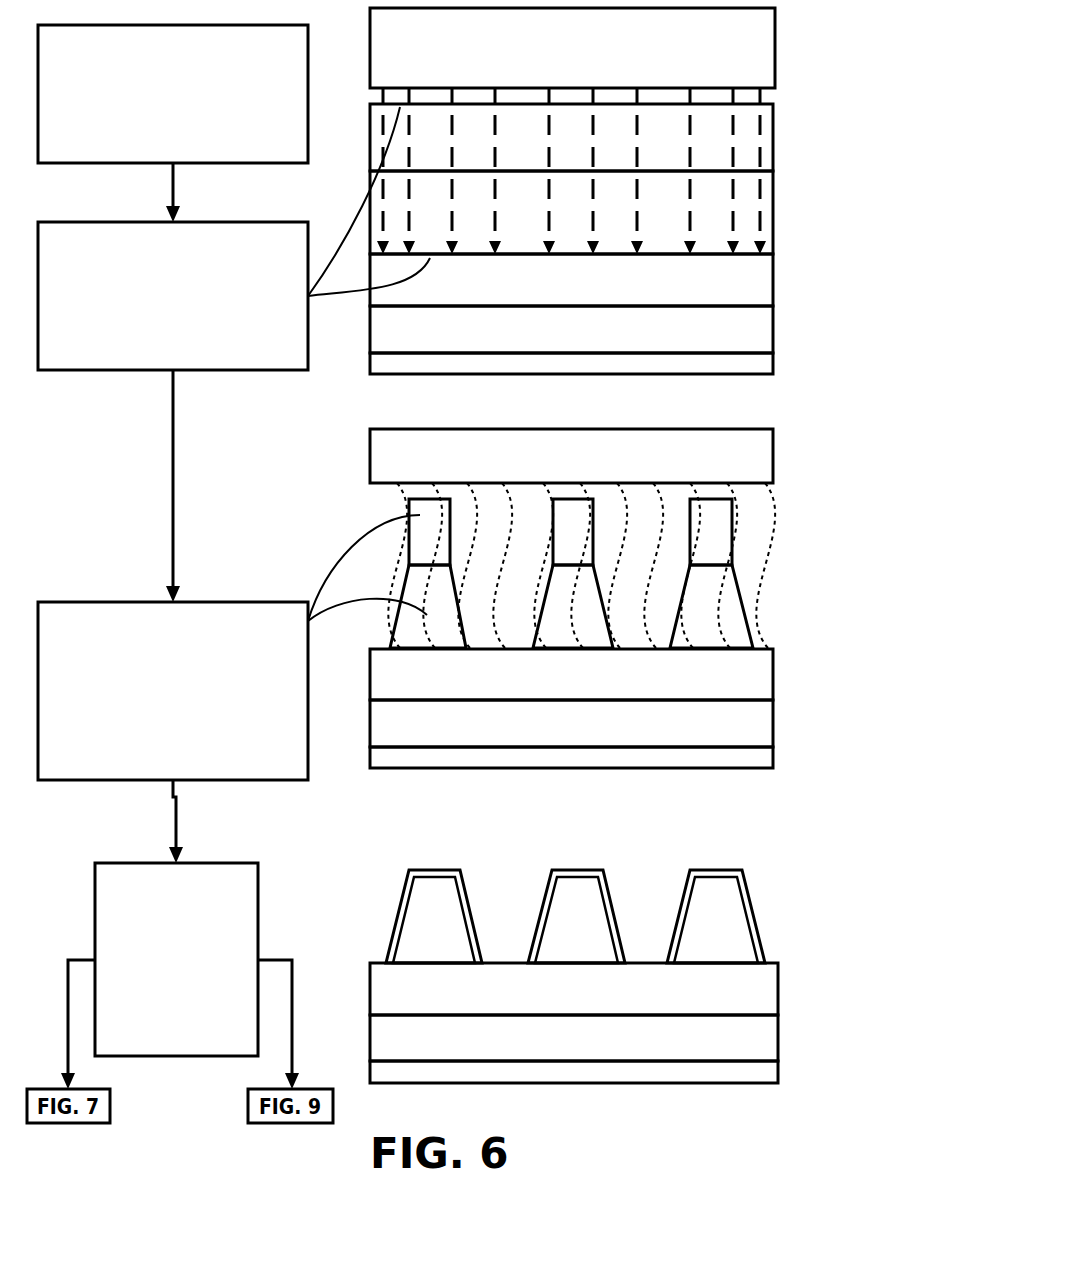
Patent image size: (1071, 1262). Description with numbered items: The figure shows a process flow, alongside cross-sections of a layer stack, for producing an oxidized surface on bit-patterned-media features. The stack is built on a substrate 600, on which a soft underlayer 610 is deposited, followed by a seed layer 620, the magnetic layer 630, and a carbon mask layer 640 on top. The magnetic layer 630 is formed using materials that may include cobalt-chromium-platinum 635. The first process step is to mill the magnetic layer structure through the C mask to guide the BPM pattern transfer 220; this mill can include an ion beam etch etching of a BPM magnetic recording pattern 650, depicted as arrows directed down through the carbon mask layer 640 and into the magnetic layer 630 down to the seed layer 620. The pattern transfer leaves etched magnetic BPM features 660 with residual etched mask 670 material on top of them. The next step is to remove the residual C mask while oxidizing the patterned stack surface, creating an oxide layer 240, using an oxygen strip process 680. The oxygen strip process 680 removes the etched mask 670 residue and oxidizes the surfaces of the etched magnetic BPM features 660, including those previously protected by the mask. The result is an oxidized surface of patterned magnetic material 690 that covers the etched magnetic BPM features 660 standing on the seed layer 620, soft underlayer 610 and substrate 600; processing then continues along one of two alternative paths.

The substrate 600 is at (760, 363).
The soft underlayer 610 is at (760, 337).
The seed layer 620 is at (760, 283).
The magnetic layer 630 is at (765, 212).
The carbon mask layer 640 is at (765, 143).
The ion beam etch etching of a BPM magnetic recording pattern 650 is at (758, 62).
The magnetic layer using materials including cobalt-chromium-platinum 635 is at (294, 66).
The mill magnetic layer structure through C mask to guide BPM pattern transfer 220 is at (294, 356).
The remove residual C mask while oxidizing the patterned surface creating an oxide l 240 is at (50, 612).
The etched magnetic BPM features 660 is at (440, 593).
The etched mask 670 is at (418, 517).
The oxygen strip process 680 is at (753, 470).
The oxidized surface of patterned magnetic material 690 is at (248, 873).